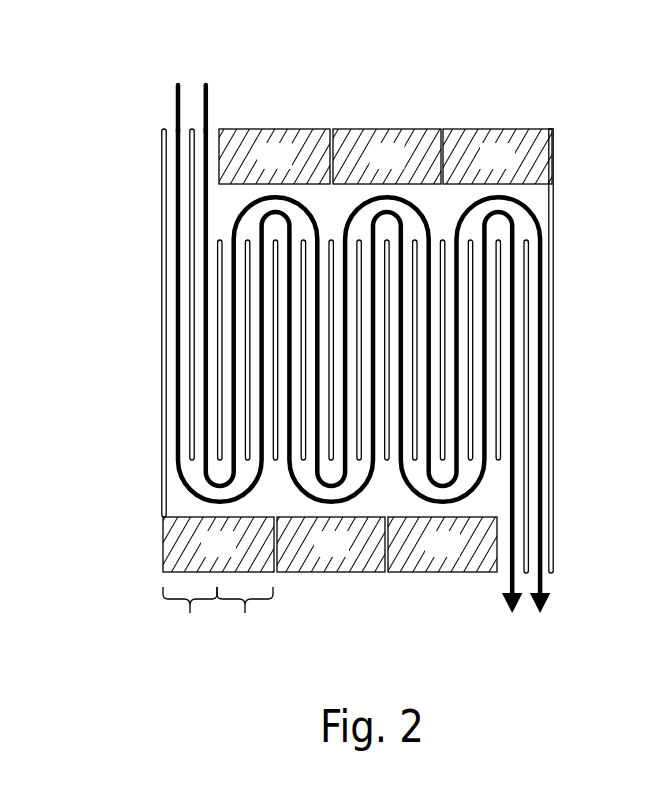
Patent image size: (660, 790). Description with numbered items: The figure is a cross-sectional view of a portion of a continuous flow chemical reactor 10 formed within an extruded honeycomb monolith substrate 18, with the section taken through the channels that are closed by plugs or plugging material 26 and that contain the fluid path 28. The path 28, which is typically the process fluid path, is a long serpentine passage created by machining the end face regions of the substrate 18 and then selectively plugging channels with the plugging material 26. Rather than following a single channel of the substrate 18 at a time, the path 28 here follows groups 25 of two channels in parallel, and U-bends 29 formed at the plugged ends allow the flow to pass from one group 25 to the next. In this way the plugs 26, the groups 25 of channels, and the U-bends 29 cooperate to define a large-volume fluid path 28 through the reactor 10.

The reactor 10 is at (188, 682).
The monolith substrate 18 is at (553, 363).
The groups of channels 25 is at (218, 619).
The plugs or plugging material 26 is at (455, 556).
The fluid path 28 is at (222, 103).
The U-bends 29 is at (618, 172).